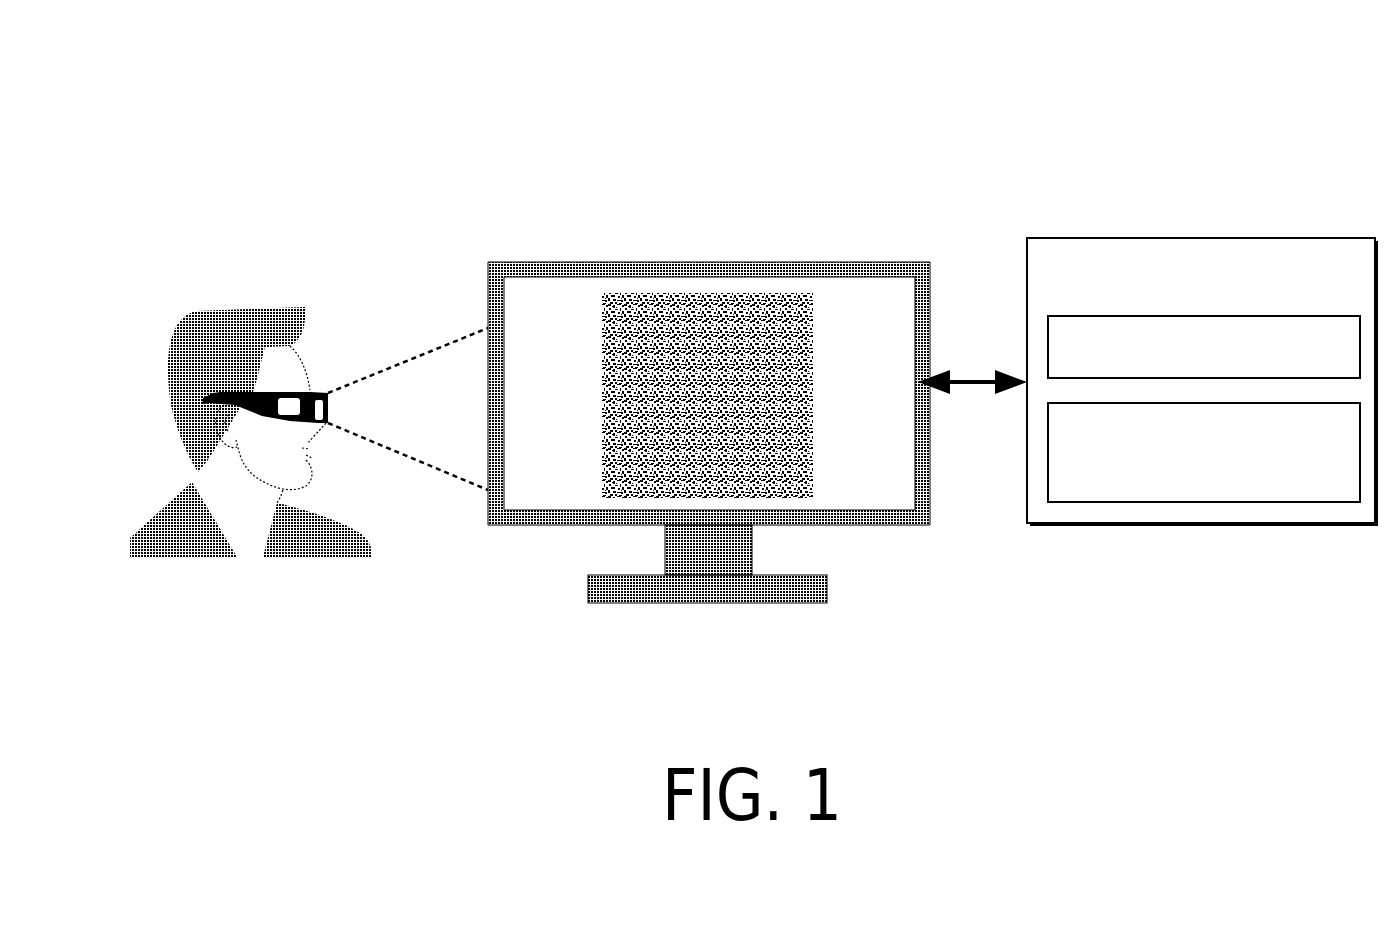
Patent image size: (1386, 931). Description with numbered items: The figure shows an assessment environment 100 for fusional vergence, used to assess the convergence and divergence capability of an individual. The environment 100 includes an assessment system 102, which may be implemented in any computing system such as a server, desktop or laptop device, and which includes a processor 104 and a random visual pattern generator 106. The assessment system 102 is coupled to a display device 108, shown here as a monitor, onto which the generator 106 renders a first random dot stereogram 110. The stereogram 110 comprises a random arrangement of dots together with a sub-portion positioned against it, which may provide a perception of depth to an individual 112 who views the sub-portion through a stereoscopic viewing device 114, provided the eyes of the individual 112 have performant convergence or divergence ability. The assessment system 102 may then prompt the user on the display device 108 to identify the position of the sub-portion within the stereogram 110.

The assessment environment 100 is at (946, 108).
The assessment system 102 is at (1325, 284).
The processor 104 is at (1283, 362).
The random visual pattern generator 106 is at (1283, 477).
The display device 108 is at (857, 262).
The stereogram 110 is at (722, 293).
The individual 112 is at (198, 312).
The stereoscopic viewing device 114 is at (318, 391).